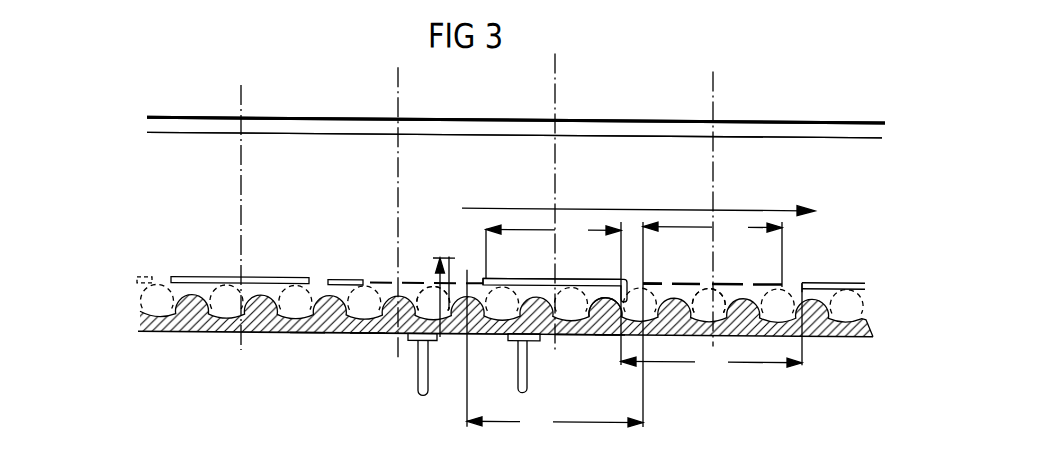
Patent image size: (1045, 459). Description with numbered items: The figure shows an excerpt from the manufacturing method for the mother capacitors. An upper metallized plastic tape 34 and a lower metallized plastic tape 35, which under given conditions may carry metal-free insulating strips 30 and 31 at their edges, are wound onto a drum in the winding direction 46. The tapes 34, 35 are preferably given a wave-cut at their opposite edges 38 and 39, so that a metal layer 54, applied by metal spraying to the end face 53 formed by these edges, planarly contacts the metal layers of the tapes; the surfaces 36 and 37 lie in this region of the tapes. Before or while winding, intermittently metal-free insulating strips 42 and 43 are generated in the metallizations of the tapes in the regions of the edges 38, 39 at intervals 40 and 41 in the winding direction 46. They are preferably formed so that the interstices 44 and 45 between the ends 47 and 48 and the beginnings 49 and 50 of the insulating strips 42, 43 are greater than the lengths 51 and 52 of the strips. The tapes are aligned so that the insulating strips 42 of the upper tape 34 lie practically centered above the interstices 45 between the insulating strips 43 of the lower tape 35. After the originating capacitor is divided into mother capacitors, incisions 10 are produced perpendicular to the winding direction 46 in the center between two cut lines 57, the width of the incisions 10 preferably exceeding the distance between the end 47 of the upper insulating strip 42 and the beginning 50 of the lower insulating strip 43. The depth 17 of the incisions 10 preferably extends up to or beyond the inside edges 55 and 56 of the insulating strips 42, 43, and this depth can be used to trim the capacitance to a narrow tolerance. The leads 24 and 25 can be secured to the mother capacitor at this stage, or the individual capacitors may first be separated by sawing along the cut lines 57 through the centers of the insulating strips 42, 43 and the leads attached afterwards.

The incisions 10 is at (487, 336).
The depth of the incisions 17 is at (430, 293).
The lead 24 is at (418, 382).
The lead 25 is at (517, 388).
The metal-free insulating strip 30 is at (468, 130).
The metal-free insulating strip 31 is at (515, 127).
The upper metallized plastic tape 34 is at (762, 185).
The lower metallized plastic tape 35 is at (817, 185).
The support surface 36 is at (613, 119).
The support surface edge 37 is at (645, 119).
The edge 38 is at (570, 335).
The edge 39 is at (611, 335).
The interval 40 is at (603, 301).
The interval 41 is at (708, 301).
The insulating strip 42 is at (818, 279).
The insulating strip 43 is at (342, 279).
The interstice 44 is at (711, 334).
The interstice 45 is at (555, 354).
The winding direction 46 is at (772, 207).
The end of the insulating strip 47 is at (803, 281).
The end of the insulating strip 48 is at (643, 282).
The beginning of the insulating strip 49 is at (608, 334).
The beginning of the insulating strip 50 is at (470, 285).
The length of the insulating strip 51 is at (553, 287).
The length of the insulating strip 52 is at (712, 319).
The end face 53 is at (368, 336).
The metal layer 54 is at (307, 336).
The inside edge of the insulating strip 55 is at (540, 279).
The inside edge of the insulating strip 56 is at (348, 279).
The cut lines 57 is at (728, 86).